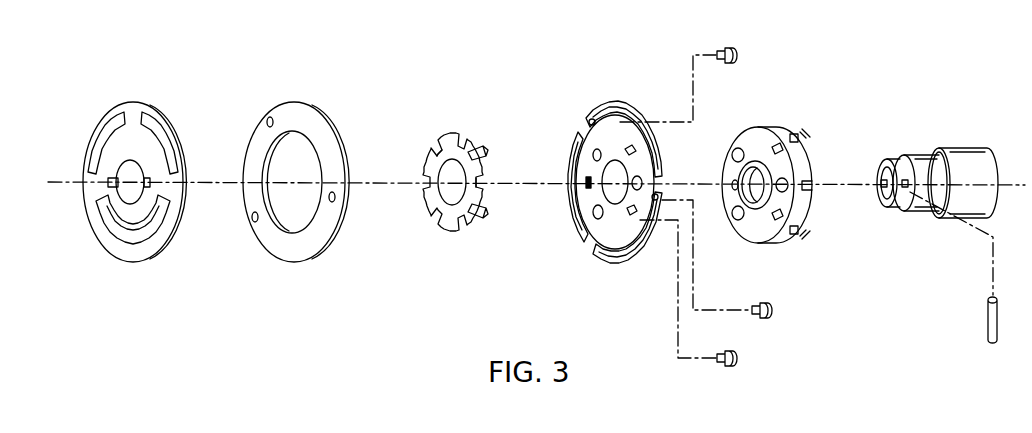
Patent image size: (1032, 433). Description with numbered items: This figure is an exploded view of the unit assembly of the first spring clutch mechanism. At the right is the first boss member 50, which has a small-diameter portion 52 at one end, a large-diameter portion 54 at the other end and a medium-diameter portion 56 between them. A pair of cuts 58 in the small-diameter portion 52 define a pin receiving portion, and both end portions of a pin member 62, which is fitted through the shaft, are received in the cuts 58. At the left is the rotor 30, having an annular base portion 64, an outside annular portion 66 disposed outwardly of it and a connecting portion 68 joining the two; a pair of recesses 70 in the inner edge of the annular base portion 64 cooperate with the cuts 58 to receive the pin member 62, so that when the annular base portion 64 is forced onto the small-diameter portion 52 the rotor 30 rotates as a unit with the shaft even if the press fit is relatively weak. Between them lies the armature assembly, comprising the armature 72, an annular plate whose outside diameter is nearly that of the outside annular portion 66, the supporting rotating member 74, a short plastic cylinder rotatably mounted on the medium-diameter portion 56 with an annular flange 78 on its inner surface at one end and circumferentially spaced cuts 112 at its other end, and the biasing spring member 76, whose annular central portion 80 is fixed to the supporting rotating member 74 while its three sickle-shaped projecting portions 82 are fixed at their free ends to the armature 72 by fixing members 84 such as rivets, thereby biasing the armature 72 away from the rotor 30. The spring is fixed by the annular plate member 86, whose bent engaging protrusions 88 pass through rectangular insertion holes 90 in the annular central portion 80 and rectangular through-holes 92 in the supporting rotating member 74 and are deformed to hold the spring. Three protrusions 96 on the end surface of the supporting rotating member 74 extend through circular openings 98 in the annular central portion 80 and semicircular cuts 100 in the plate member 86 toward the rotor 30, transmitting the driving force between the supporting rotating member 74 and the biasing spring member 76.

The rotor 30 is at (126, 201).
The annular base portion 64 is at (137, 222).
The outside annular portion 66 is at (167, 213).
The connecting portion 68 is at (130, 130).
The recesses 70 is at (112, 176).
The armature 72 is at (295, 258).
The annular plate member 86 is at (455, 172).
The engaging protrusions 88 is at (485, 147).
The semicircular cuts 100 is at (437, 153).
The biasing spring member 76 is at (626, 183).
The annular central portion 80 is at (620, 227).
The projecting portions 82 is at (626, 108).
The insertion holes 90 is at (636, 148).
The circular openings 98 is at (643, 180).
The fixing member 84 is at (726, 48).
The supporting rotating member 74 is at (775, 188).
The annular flange 78 is at (761, 162).
The rectangular through-holes 92 is at (779, 144).
The protrusions 96 is at (735, 150).
The cuts 112 is at (798, 137).
The first boss member 50 is at (938, 186).
The small-diameter portion 52 is at (893, 168).
The large-diameter portion 54 is at (968, 160).
The medium-diameter portion 56 is at (922, 214).
The cuts 58 is at (900, 208).
The pin member 62 is at (995, 327).